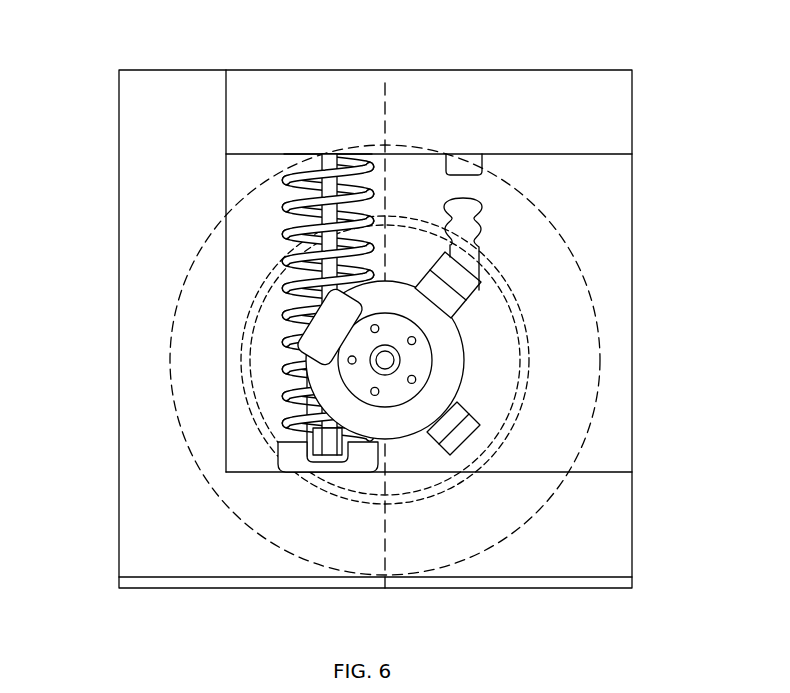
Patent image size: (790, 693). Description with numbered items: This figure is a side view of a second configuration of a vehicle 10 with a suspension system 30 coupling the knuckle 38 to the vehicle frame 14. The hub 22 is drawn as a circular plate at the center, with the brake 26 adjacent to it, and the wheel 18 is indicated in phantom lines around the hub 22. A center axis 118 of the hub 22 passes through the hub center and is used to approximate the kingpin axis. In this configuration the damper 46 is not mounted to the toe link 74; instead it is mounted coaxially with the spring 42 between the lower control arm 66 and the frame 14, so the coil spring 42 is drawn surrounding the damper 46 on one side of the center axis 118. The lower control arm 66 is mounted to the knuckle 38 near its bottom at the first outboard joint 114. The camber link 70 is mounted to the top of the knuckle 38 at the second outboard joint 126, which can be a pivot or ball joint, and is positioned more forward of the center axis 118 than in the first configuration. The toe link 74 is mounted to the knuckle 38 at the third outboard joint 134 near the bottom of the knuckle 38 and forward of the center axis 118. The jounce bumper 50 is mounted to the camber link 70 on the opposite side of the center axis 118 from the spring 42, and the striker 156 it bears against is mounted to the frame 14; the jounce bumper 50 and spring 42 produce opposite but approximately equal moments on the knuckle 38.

The vehicle 10 is at (166, 100).
The vehicle frame 14 is at (243, 84).
The suspension system 30 is at (228, 172).
The wheel 18 is at (168, 355).
The center axis 118 is at (388, 553).
The spring 42 is at (368, 150).
The damper 46 is at (198, 305).
The knuckle 38 is at (317, 413).
The lower control arm 66 is at (278, 463).
The first outboard joint 114 is at (322, 452).
The hub 22 is at (395, 395).
The brake 26 is at (300, 343).
The camber link 70 is at (561, 307).
The second outboard joint 126 is at (457, 280).
The jounce bumper 50 is at (482, 210).
The striker 156 is at (467, 175).
The third outboard joint 134 is at (573, 481).
The toe link 74 is at (465, 433).